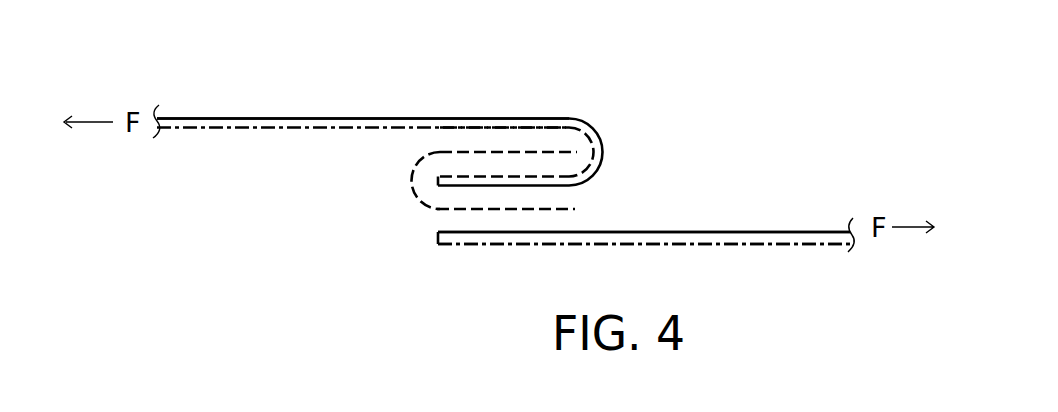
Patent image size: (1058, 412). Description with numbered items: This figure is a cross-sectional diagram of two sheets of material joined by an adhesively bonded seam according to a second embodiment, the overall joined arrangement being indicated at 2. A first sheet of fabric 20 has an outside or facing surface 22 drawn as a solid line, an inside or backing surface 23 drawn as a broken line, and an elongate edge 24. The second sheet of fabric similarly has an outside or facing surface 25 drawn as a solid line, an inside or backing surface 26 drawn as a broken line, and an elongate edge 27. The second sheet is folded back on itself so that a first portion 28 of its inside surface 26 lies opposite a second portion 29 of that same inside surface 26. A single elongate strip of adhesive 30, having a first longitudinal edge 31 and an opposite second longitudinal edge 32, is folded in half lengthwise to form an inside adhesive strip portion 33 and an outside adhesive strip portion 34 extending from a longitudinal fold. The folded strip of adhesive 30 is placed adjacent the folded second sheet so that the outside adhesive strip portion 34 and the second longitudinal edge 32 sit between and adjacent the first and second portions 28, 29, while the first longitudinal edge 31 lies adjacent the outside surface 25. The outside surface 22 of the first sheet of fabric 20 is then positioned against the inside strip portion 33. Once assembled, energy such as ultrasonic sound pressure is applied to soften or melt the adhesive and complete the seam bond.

The strap arrangement 2 is at (268, 95).
The first sheet of fabric 20 is at (745, 267).
The outside or facing surface 22 is at (748, 227).
The inside or backing surface 23 is at (613, 247).
The elongate edge 24 is at (435, 238).
The outside or facing surface 25 is at (376, 112).
The inside or backing surface 26 is at (278, 134).
The elongate edge 27 is at (433, 183).
The first portion 28 is at (550, 168).
The second portion 29 is at (450, 138).
The elongate strip of adhesive 30 is at (415, 168).
The first longitudinal edge 31 is at (577, 208).
The second longitudinal edge 32 is at (576, 150).
The inside adhesive strip portion 33 is at (497, 213).
The outside adhesive strip portion 34 is at (505, 163).